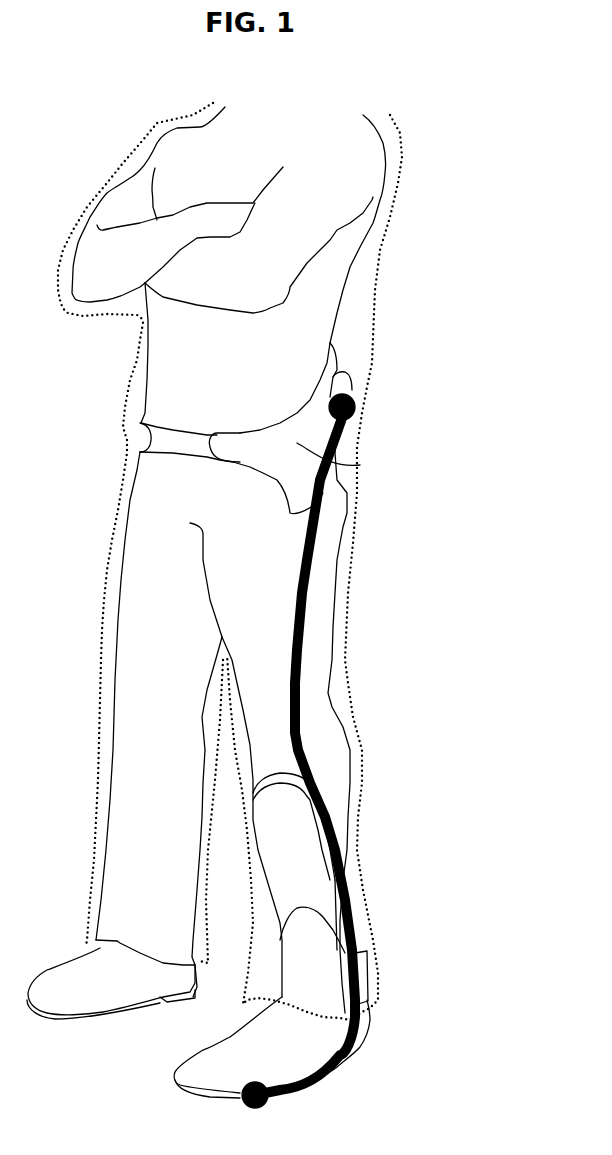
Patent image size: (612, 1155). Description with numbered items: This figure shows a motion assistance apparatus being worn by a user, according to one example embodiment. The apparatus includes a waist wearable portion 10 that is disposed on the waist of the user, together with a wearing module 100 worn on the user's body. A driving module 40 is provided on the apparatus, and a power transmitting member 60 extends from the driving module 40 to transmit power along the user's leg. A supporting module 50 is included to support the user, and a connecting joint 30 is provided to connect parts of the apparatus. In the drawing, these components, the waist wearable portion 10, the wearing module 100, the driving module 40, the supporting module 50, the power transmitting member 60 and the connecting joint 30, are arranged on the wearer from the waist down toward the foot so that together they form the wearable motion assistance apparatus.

The waist wearable portion 10 is at (327, 462).
The connecting joint 30 is at (367, 962).
The driving module 40 is at (342, 390).
The supporting module 50 is at (297, 1077).
The power transmitting member 60 is at (307, 598).
The wearing module 100 is at (303, 850).